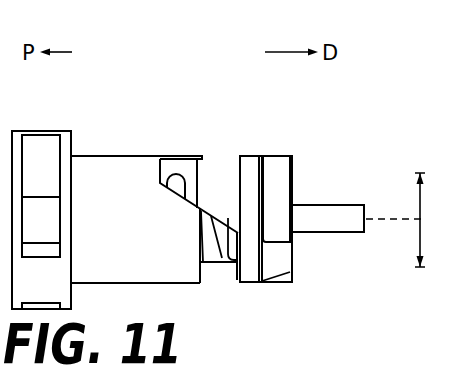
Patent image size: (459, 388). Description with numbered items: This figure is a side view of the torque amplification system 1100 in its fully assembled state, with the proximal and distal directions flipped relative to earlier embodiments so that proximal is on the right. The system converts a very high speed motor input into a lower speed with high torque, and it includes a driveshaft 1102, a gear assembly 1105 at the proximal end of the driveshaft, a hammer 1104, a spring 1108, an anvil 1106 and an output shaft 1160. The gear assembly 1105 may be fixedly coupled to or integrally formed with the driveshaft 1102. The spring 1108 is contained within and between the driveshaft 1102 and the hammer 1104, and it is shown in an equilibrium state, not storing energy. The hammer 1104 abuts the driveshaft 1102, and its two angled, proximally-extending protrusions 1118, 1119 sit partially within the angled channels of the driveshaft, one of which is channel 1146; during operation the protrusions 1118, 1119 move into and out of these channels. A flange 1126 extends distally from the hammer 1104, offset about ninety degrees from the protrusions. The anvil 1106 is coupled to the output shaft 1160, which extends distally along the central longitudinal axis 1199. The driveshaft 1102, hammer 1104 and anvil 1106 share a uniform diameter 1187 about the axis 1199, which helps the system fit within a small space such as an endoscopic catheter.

The torque amplification system 1100 is at (191, 61).
The driveshaft 1102 is at (113, 175).
The hammer 1104 is at (248, 276).
The gear assembly 1105 is at (42, 148).
The anvil 1106 is at (275, 172).
The spring 1108 is at (223, 267).
The protrusion 1118 is at (208, 276).
The protrusion 1119 is at (217, 183).
The flange 1126 is at (282, 272).
The channel 1146 is at (168, 158).
The output shaft 1160 is at (343, 225).
The uniform diameter 1187 is at (418, 233).
The central longitudinal axis 1199 is at (366, 219).